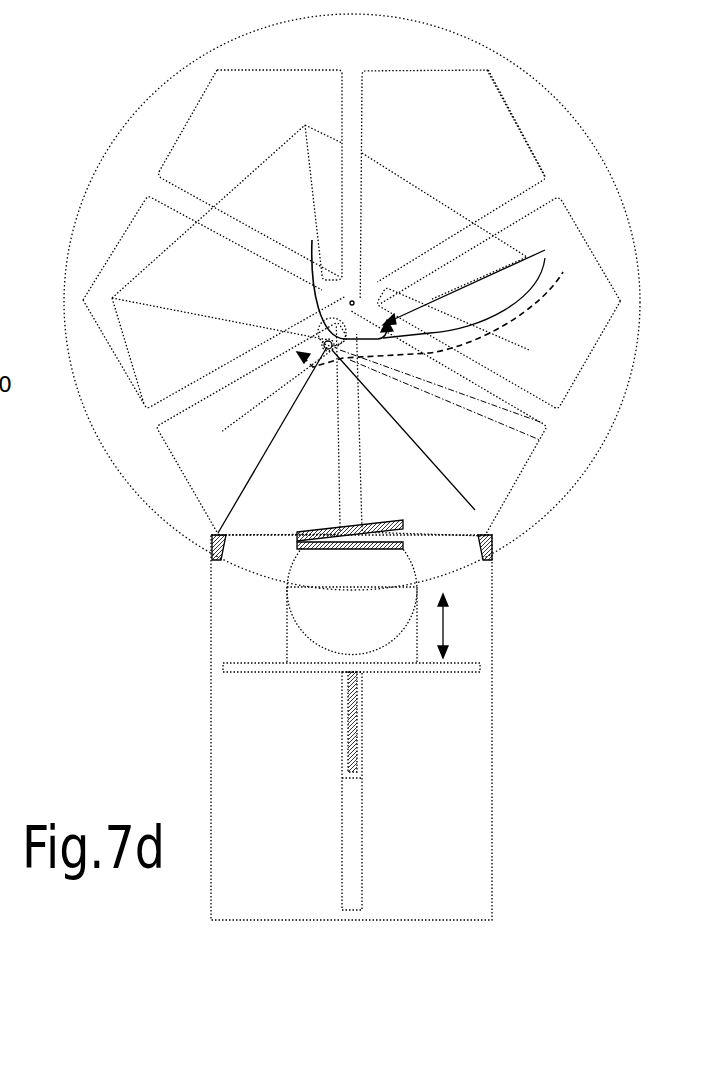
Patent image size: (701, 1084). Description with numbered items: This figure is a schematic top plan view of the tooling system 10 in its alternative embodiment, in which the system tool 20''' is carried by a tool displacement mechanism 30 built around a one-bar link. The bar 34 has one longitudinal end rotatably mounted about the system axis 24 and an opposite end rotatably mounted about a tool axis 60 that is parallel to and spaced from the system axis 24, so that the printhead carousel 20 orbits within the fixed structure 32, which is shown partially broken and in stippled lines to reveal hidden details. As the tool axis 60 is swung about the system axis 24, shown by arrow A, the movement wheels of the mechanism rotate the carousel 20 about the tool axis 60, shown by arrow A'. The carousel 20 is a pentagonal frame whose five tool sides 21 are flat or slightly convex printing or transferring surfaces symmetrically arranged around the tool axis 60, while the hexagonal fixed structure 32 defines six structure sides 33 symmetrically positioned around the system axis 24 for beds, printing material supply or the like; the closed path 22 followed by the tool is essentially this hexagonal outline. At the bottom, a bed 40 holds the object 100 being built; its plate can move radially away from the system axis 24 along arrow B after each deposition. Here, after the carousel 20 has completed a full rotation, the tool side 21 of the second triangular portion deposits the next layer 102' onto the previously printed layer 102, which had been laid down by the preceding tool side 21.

The system 10 is at (610, 692).
The printhead carousel 20 is at (350, 452).
The system tool 20''' is at (344, 333).
The tool side 21 is at (117, 323).
The closed path 22 is at (603, 327).
The system axis 24 is at (353, 300).
The tool displacement mechanism 30 is at (312, 332).
The fixed structure 32 is at (100, 448).
The structure side 33 is at (530, 147).
The bar 34 is at (320, 349).
The bed 40 is at (303, 672).
The tool axis 60 is at (328, 350).
The object 100 is at (293, 567).
The layer 102 is at (438, 602).
The next layer 102' is at (469, 547).
The arrow A is at (433, 281).
The arrow A' is at (441, 308).
The arrow B is at (443, 628).